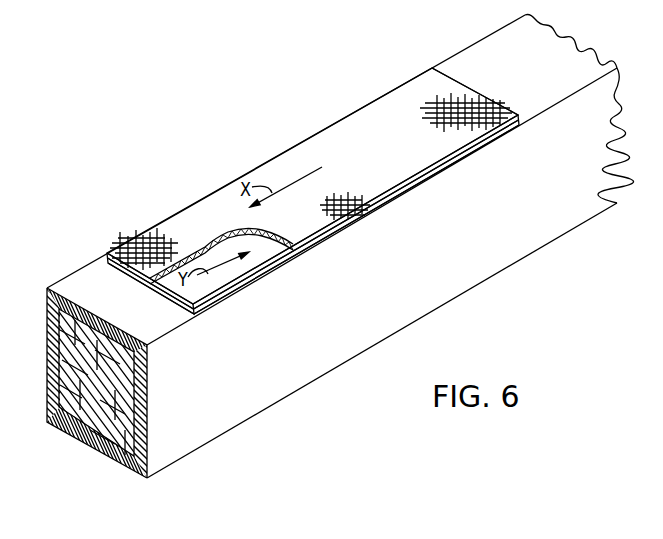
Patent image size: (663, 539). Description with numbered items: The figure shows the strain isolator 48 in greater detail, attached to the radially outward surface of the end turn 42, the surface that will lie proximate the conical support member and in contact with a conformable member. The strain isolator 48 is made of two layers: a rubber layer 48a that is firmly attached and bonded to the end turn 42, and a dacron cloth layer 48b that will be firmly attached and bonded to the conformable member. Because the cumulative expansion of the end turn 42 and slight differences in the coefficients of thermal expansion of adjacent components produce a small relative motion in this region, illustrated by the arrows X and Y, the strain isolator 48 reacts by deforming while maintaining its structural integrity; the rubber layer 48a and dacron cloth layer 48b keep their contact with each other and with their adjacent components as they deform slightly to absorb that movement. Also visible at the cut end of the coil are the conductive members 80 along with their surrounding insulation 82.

The end turn 42 is at (557, 44).
The strain isolator 48 is at (107, 257).
The rubber layer 48a is at (197, 296).
The dacron cloth layer 48b is at (388, 101).
The conductive members 80 is at (92, 412).
The insulation 82 is at (142, 480).